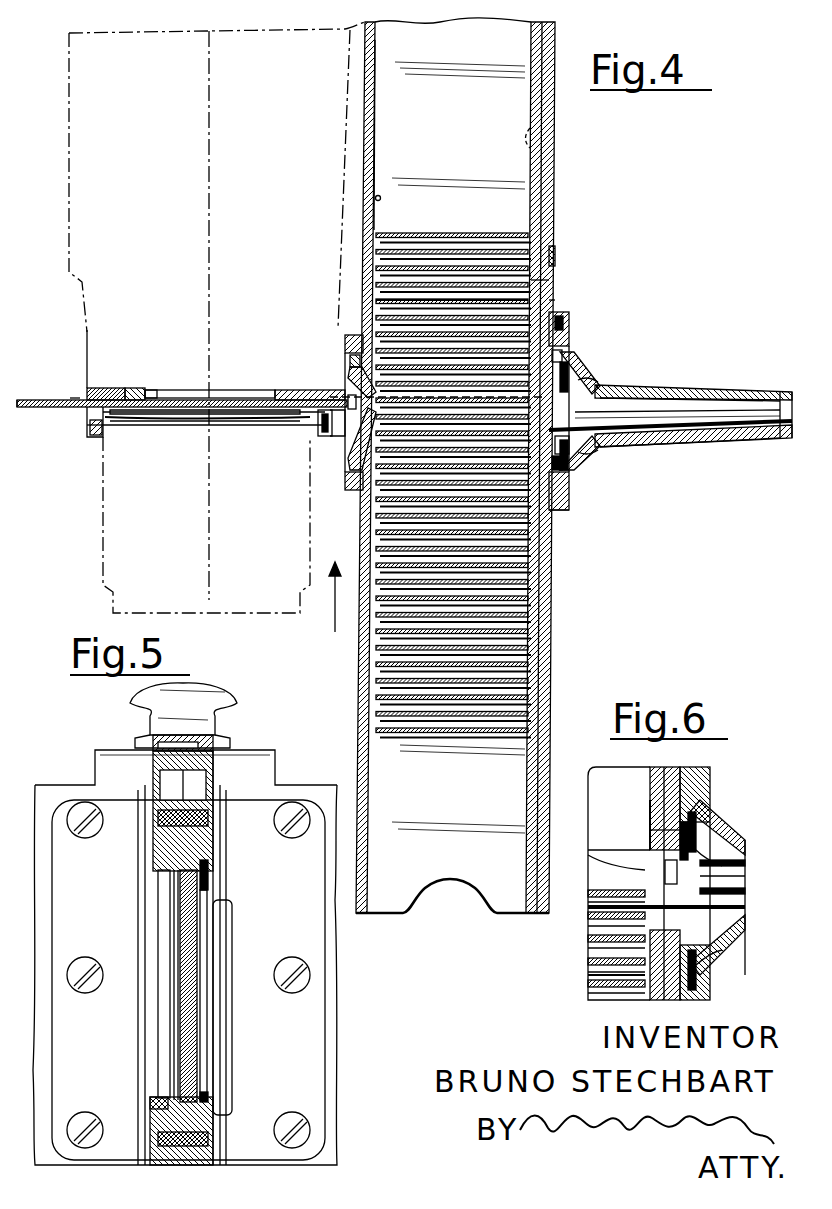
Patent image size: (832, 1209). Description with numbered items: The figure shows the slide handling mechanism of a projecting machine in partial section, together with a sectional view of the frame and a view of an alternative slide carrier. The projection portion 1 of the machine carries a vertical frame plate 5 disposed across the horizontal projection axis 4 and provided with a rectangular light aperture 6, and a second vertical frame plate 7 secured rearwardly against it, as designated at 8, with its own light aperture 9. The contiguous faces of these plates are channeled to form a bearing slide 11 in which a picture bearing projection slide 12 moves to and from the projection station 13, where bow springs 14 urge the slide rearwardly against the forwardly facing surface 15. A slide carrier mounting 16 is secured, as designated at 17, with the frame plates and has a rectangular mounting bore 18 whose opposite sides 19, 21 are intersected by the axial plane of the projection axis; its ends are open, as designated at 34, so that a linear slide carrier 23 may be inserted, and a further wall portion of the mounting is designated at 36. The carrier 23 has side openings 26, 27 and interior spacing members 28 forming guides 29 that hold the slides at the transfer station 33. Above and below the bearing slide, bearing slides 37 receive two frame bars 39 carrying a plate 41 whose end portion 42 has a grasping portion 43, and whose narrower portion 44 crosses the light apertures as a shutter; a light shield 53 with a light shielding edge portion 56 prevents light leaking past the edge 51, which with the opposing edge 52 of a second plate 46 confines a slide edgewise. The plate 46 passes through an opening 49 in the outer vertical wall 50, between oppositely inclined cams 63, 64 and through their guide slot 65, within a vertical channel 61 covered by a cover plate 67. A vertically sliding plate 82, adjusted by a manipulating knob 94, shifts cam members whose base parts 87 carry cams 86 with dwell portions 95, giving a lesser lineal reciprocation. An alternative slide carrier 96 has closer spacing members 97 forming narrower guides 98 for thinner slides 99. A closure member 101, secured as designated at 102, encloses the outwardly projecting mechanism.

In FIG. 4, the projection portion 1 is at (66, 174).
In FIG. 4, the projection axis 4 is at (205, 246).
In FIG. 4, the vertical frame plate 5 is at (104, 390).
In FIG. 5, the vertical frame plate 5 is at (158, 846).
In FIG. 4, the light aperture 6 is at (168, 390).
In FIG. 5, the light aperture 6 is at (152, 1088).
In FIG. 4, the second vertical frame plate 7 is at (90, 426).
In FIG. 5, the second vertical frame plate 7 is at (210, 864).
In FIG. 5, the securing means 8 is at (216, 758).
In FIG. 4, the light aperture 9 is at (152, 424).
In FIG. 5, the light aperture 9 is at (222, 1082).
In FIG. 4, the bearing slide 11 is at (222, 418).
In FIG. 5, the bearing slide 11 is at (162, 888).
In FIG. 4, the picture bearing projection slide 12 is at (372, 280).
In FIG. 5, the picture bearing projection slide 12 is at (180, 928).
In FIG. 4, the projection station 13 is at (238, 424).
In FIG. 5, the projection station 13 is at (180, 988).
In FIG. 4, the bow springs 14 is at (172, 424).
In FIG. 5, the bow springs 14 is at (212, 884).
In FIG. 4, the forwardly facing surface 15 is at (133, 390).
In FIG. 5, the forwardly facing surface 15 is at (175, 1086).
In FIG. 4, the slide carrier mounting 16 is at (364, 100).
In FIG. 6, the slide carrier mounting 16 is at (610, 760).
In FIG. 4, the securing means 17 is at (346, 340).
In FIG. 4, the mounting bore 18 is at (372, 151).
In FIG. 6, the mounting bore 18 is at (630, 770).
In FIG. 4, the side of mounting bore 19 is at (376, 197).
In FIG. 4, the side of mounting bore 21 is at (548, 148).
In FIG. 6, the side of mounting bore 21 is at (650, 798).
In FIG. 4, the linear slide carrier 23 is at (434, 232).
In FIG. 4, the side opening 26 is at (376, 296).
In FIG. 4, the side opening 27 is at (554, 258).
In FIG. 4, the spacing members 28 is at (532, 292).
In FIG. 4, the guides 29 is at (506, 270).
In FIG. 4, the transfer station 33 is at (348, 358).
In FIG. 4, the open ends of mounting bore 34 is at (392, 914).
In FIG. 4, the wall 36 is at (533, 158).
In FIG. 6, the wall 36 is at (650, 780).
In FIG. 5, the bearing slides 37 is at (158, 818).
In FIG. 4, the frame bars 39 is at (746, 395).
In FIG. 5, the frame bars 39 is at (218, 818).
In FIG. 4, the vertical transversely disposed plate 41 is at (72, 395).
In FIG. 4, the end portion 42 is at (64, 398).
In FIG. 4, the extending portion 43 is at (48, 407).
In FIG. 4, the portion of plate 44 is at (178, 396).
In FIG. 4, the plate 46 is at (752, 438).
In FIG. 6, the plate 46 is at (746, 912).
In FIG. 4, the opening 49 is at (564, 334).
In FIG. 6, the opening 49 is at (656, 850).
In FIG. 4, the outer vertical wall 50 is at (552, 242).
In FIG. 6, the outer vertical wall 50 is at (680, 768).
In FIG. 4, the vertical edge 51 is at (320, 390).
In FIG. 4, the vertical edge 52 is at (568, 474).
In FIG. 6, the vertical edge 52 is at (660, 866).
In FIG. 4, the light shield 53 is at (326, 437).
In FIG. 4, the light shielding edge portion 56 is at (344, 444).
In FIG. 4, the vertical channel 61 is at (574, 358).
In FIG. 4, the cam 63 is at (604, 442).
In FIG. 6, the cam 63 is at (734, 960).
In FIG. 4, the cam 64 is at (602, 388).
In FIG. 6, the cam 64 is at (716, 842).
In FIG. 4, the guide slot 65 is at (576, 410).
In FIG. 6, the guide slot 65 is at (746, 874).
In FIG. 4, the cover plate 67 is at (566, 498).
In FIG. 6, the cover plate 67 is at (700, 800).
In FIG. 4, the plate 82 is at (553, 520).
In FIG. 6, the plate 82 is at (650, 820).
In FIG. 4, the cams 86 is at (584, 374).
In FIG. 6, the cams 86 is at (746, 860).
In FIG. 4, the base part 87 is at (580, 364).
In FIG. 6, the base part 87 is at (704, 822).
In FIG. 5, the manipulating knob 94 is at (218, 694).
In FIG. 4, the dwell portions 95 is at (600, 380).
In FIG. 6, the dwell portions 95 is at (724, 850).
In FIG. 6, the slide carrier 96 is at (596, 886).
In FIG. 6, the spacing members 97 is at (594, 898).
In FIG. 6, the guides 98 is at (590, 980).
In FIG. 6, the picture bearing slides 99 is at (590, 893).
In FIG. 4, the closure member 101 is at (702, 390).
In FIG. 6, the closure member 101 is at (718, 980).
In FIG. 4, the securing means 102 is at (556, 304).